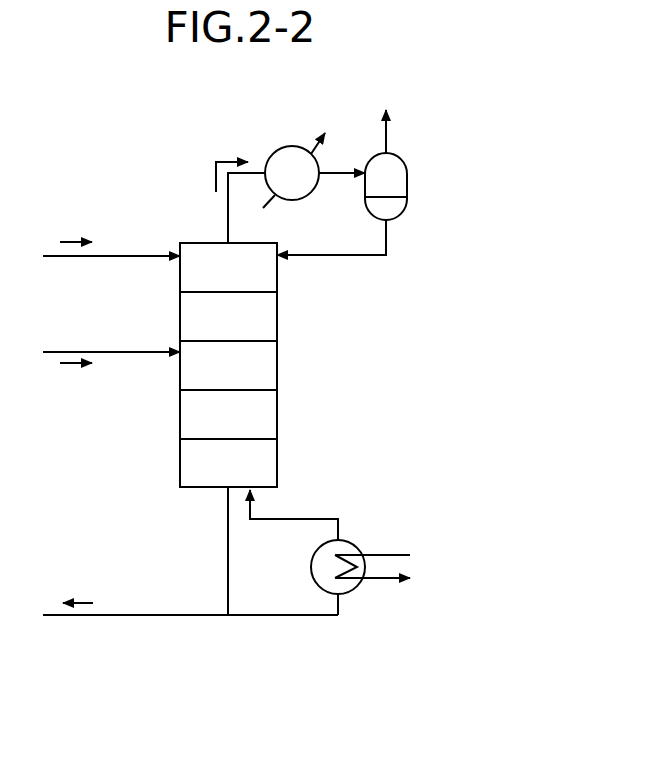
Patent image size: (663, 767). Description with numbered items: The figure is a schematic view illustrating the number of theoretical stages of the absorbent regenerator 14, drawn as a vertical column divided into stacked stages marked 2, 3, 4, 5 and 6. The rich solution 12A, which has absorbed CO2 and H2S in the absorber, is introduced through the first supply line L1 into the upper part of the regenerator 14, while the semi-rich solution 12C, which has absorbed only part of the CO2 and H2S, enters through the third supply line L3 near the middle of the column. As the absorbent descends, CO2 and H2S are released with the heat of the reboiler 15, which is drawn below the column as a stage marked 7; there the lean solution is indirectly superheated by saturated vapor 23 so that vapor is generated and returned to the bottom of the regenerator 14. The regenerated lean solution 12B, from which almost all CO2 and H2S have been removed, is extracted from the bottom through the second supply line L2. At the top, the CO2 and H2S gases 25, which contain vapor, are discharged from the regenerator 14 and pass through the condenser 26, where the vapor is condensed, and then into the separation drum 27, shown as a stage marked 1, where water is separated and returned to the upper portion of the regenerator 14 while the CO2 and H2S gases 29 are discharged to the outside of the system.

The separator stage 1 is at (386, 177).
The column stage 2 is at (228, 267).
The column stage 3 is at (228, 316).
The column stage 4 is at (228, 365).
The column stage 5 is at (228, 414).
The column stage 6 is at (228, 463).
The reboiler stage 7 is at (325, 567).
The rich solution 12A is at (68, 238).
The lean solution 12B is at (78, 598).
The semi-rich solution 12C is at (73, 368).
The absorbent regenerator 14 is at (320, 335).
The reboiler 15 is at (345, 538).
The saturated vapor 23 is at (392, 553).
The CO2 and H2S gases 25 is at (215, 172).
The condenser 26 is at (282, 147).
The separation drum 27 is at (408, 186).
The CO2 and H2S gases 29 is at (388, 133).
The first supply line L1 is at (132, 250).
The second supply line L2 is at (163, 613).
The third supply line L3 is at (128, 347).